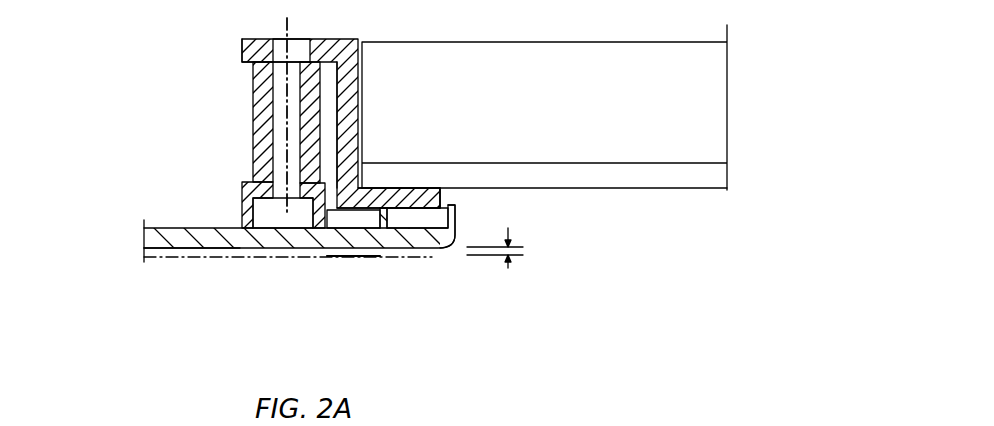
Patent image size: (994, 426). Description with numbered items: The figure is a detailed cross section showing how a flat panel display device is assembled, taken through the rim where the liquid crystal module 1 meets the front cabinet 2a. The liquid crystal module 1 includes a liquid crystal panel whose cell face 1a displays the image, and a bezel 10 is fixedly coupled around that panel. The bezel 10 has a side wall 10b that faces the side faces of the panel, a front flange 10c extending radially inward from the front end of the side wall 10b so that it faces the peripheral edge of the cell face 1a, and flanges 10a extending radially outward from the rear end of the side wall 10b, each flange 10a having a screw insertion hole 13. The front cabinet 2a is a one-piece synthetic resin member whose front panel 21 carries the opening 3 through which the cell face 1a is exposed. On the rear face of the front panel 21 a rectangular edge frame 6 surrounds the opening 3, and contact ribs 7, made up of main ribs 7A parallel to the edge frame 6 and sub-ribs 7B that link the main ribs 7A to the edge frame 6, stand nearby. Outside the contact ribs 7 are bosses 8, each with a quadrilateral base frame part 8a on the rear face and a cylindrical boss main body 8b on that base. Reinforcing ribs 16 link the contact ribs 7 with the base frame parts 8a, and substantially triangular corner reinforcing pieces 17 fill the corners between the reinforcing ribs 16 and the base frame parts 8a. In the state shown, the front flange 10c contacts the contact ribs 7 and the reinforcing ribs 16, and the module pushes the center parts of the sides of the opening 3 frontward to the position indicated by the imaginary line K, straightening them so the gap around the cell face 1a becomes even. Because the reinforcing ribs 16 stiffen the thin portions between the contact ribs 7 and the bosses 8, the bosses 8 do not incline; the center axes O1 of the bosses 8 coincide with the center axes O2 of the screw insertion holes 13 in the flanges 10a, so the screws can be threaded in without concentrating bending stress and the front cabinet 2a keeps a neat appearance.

The liquid crystal module 1 is at (633, 62).
The cell face 1a is at (615, 190).
The front cabinet 2a is at (143, 238).
The opening 3 is at (447, 192).
The rectangular edge frame 6 is at (457, 220).
The contact ribs 7 is at (525, 280).
The main ribs 7A is at (378, 220).
The sub-ribs 7B is at (412, 220).
The bosses 8 is at (117, 130).
The base frame part 8a is at (250, 207).
The boss main body 8b is at (258, 148).
The bezel 10 is at (410, 198).
The flanges 10a is at (243, 48).
The side wall 10b is at (340, 97).
The front flange 10c is at (427, 202).
The screw insertion holes 13 is at (292, 52).
The reinforcing ribs 16 is at (342, 220).
The corner reinforcing pieces 17 is at (303, 220).
The front panel 21 is at (210, 237).
The imaginary line K is at (353, 258).
The center axes of the bosses O1 is at (287, 122).
The center axes of the screw insertion holes O2 is at (286, 22).